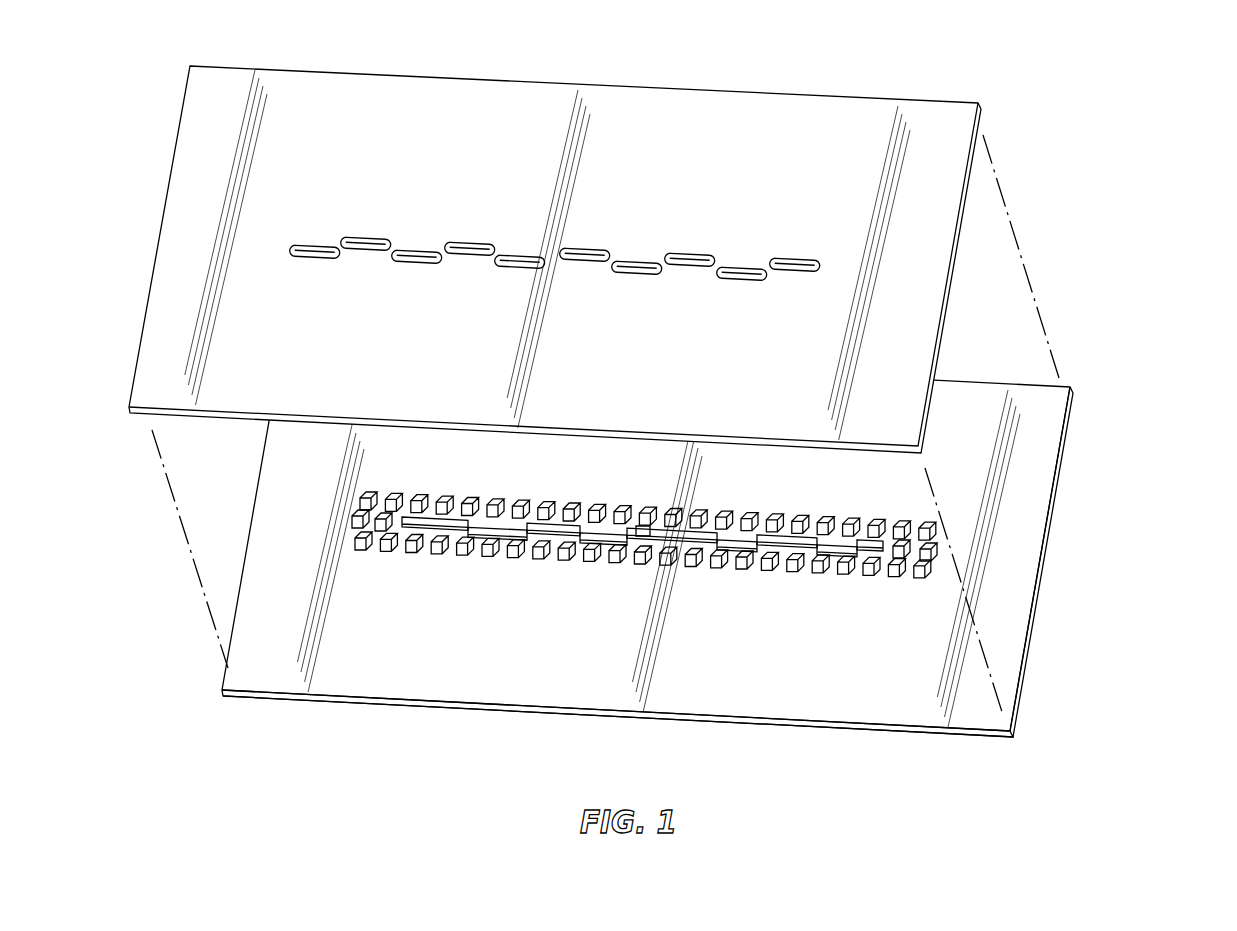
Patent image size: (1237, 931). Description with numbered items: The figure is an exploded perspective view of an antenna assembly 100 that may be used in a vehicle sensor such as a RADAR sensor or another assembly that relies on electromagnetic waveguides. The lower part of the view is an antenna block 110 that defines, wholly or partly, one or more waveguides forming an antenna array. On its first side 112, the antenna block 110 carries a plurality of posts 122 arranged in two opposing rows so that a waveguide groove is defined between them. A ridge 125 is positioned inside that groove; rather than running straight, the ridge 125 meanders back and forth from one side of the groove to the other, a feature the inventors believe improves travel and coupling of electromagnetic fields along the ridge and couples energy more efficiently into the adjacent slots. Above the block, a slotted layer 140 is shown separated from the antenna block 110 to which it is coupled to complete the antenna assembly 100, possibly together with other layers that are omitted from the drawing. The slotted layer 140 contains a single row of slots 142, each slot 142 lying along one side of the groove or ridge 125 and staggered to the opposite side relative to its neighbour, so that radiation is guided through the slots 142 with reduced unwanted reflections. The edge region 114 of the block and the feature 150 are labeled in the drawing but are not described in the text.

The antenna assembly 100 is at (1118, 162).
The antenna block 110 is at (1020, 565).
The first side 112 is at (1012, 643).
The front edge of lower substrate 114 is at (963, 735).
The posts 122 is at (823, 517).
The ridge 125 is at (530, 545).
The slotted layer 140 is at (830, 102).
The slots 142 is at (368, 225).
The alignment feature 150 is at (646, 518).